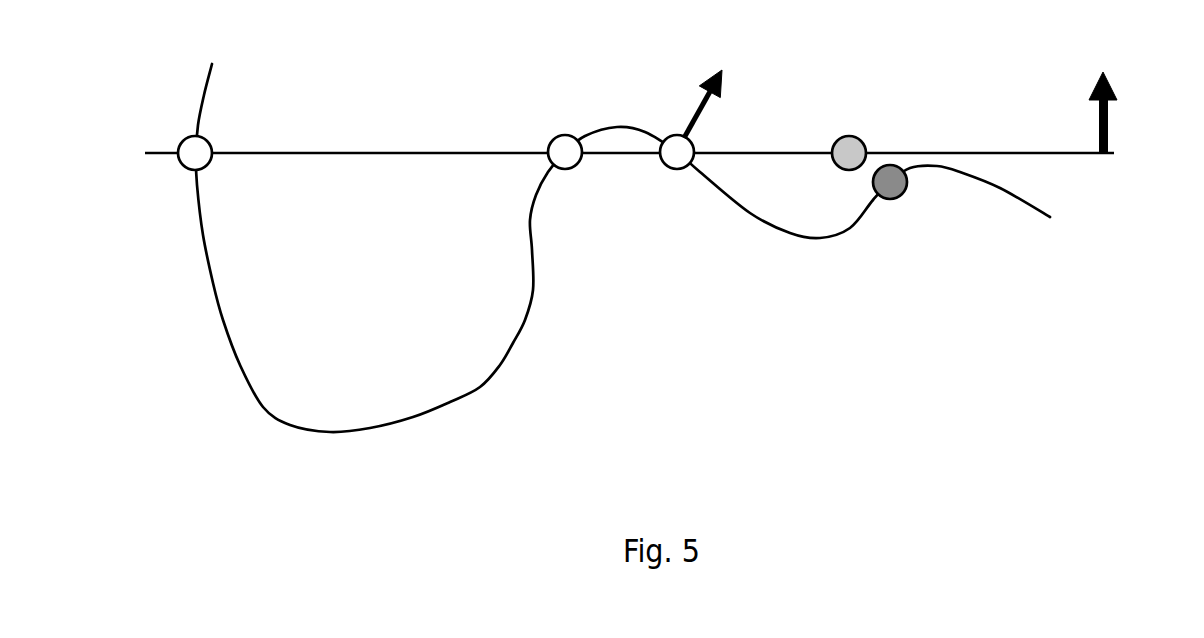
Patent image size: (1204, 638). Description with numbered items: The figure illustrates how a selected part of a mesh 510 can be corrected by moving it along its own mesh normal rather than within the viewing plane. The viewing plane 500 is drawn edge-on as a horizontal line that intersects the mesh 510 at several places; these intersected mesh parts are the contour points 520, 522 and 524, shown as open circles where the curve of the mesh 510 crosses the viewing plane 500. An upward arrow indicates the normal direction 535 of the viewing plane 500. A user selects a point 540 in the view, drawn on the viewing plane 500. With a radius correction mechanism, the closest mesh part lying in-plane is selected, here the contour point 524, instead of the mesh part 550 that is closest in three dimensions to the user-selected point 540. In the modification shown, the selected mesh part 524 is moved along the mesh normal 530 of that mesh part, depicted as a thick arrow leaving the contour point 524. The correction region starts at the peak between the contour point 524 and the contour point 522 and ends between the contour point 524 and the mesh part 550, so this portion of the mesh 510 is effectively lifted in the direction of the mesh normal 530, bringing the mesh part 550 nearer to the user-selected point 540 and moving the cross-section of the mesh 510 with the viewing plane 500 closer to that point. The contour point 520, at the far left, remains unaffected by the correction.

The viewing plane 500 is at (1070, 155).
The mesh 510 is at (493, 373).
The contour point 520 is at (205, 168).
The contour point 522 is at (567, 170).
The selected mesh part 524 is at (678, 170).
The mesh normal 530 is at (707, 80).
The normal direction of the viewing plane 535 is at (1108, 110).
The user-selected point 540 is at (838, 138).
The mesh part 550 is at (898, 198).